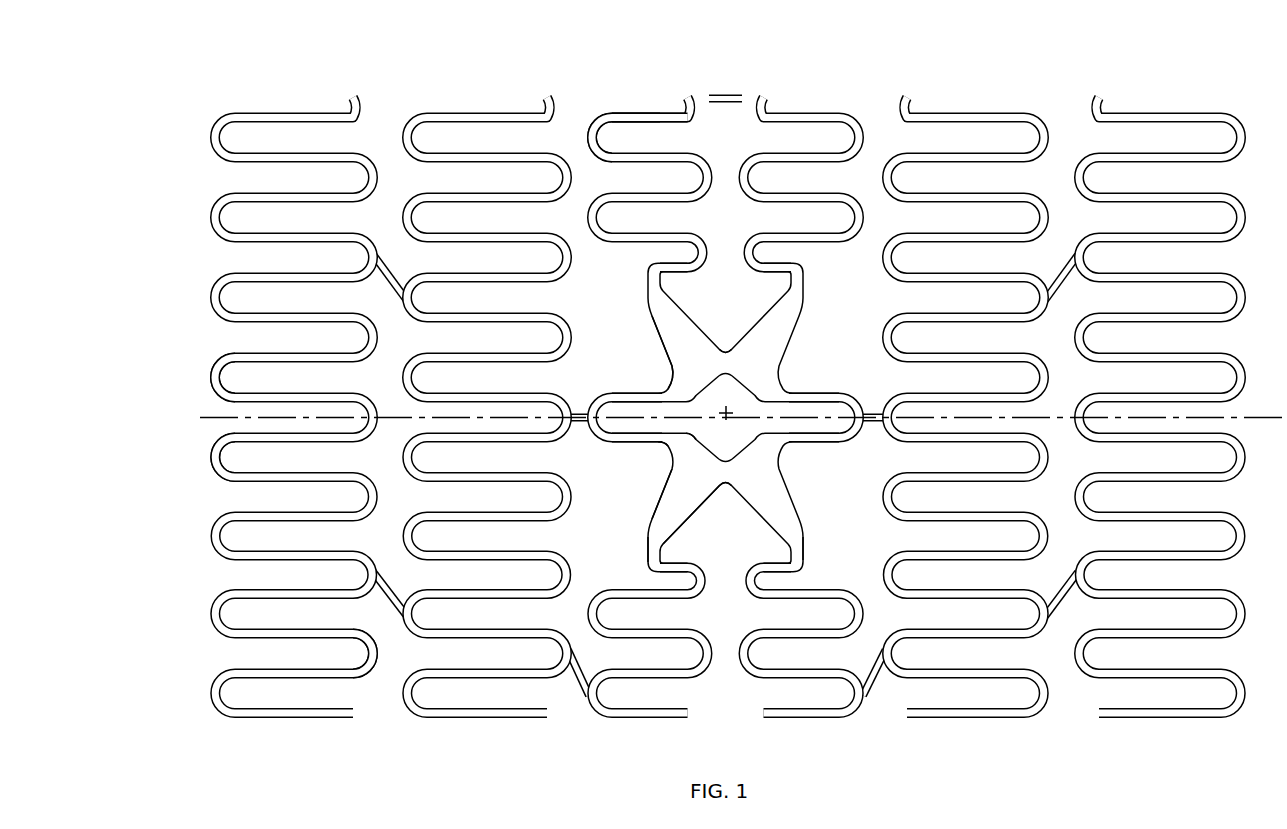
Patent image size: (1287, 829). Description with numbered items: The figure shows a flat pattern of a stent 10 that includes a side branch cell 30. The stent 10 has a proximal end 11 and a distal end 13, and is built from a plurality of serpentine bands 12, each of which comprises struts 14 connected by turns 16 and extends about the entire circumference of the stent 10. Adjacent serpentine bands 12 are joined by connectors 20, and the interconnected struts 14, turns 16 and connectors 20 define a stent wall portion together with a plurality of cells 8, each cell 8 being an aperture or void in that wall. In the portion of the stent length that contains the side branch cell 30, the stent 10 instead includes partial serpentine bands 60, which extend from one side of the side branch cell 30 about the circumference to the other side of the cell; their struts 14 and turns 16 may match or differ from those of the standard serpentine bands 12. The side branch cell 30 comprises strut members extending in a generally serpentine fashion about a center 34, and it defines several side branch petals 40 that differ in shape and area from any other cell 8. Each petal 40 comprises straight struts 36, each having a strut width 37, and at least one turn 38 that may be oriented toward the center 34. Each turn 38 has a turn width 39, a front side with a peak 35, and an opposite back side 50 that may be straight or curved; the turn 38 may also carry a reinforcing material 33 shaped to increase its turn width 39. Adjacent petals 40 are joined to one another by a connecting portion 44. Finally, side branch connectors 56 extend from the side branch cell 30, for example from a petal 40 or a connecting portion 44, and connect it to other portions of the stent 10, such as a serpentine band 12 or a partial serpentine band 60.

The stent 10 is at (230, 86).
The proximal end 11 is at (1245, 293).
The cell 8 is at (222, 457).
The serpentine band 12 is at (233, 637).
The distal end 13 is at (212, 378).
The strut 14 is at (683, 123).
The turn 16 is at (598, 139).
The connector 20 is at (730, 96).
The partial serpentine band 60 is at (648, 113).
The side branch cell 30 is at (798, 328).
The reinforcing material 33 is at (727, 354).
The center 34 is at (731, 409).
The peak 35 is at (698, 438).
The strut 36 is at (655, 497).
The strut width 37 is at (608, 403).
The turn 38 is at (683, 448).
The turn width 39 is at (712, 404).
The side branch petal 40 is at (667, 432).
The connecting portion 44 is at (641, 533).
The back side 50 is at (663, 450).
The side branch connector 56 is at (877, 428).